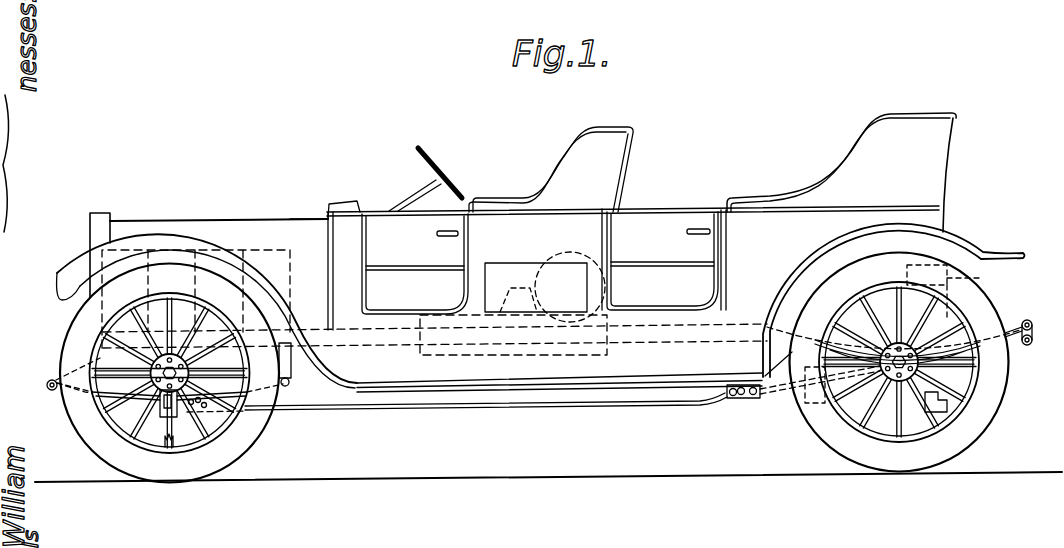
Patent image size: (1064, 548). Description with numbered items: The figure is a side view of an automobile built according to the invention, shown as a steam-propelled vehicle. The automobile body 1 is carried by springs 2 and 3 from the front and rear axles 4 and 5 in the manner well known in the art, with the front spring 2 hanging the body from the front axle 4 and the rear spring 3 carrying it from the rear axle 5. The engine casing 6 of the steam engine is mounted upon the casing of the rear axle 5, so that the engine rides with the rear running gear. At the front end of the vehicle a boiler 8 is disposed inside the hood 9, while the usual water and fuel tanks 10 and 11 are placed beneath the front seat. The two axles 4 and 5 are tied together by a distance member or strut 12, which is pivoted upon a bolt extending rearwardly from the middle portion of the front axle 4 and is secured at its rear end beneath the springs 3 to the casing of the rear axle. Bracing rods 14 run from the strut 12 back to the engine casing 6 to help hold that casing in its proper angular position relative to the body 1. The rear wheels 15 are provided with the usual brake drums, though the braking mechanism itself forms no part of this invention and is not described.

The automobile body 1 is at (752, 218).
The front spring 2 is at (97, 398).
The rear spring 3 is at (1012, 320).
The front axle 4 is at (173, 413).
The rear axle 5 is at (896, 366).
The engine casing 6 is at (922, 302).
The boiler 8 is at (262, 262).
The hood 9 is at (190, 221).
The water tank 10 is at (519, 292).
The fuel tank 11 is at (582, 250).
The strut 12 is at (502, 403).
The bracing rods 14 is at (772, 396).
The rear wheels 15 is at (981, 421).